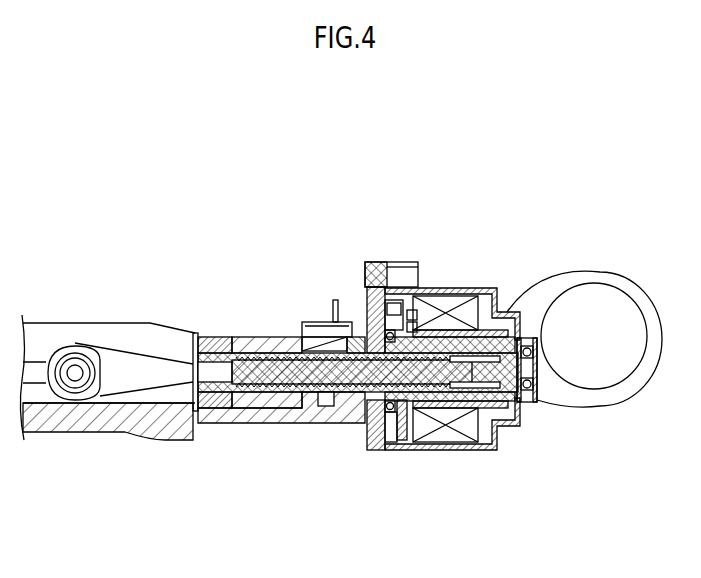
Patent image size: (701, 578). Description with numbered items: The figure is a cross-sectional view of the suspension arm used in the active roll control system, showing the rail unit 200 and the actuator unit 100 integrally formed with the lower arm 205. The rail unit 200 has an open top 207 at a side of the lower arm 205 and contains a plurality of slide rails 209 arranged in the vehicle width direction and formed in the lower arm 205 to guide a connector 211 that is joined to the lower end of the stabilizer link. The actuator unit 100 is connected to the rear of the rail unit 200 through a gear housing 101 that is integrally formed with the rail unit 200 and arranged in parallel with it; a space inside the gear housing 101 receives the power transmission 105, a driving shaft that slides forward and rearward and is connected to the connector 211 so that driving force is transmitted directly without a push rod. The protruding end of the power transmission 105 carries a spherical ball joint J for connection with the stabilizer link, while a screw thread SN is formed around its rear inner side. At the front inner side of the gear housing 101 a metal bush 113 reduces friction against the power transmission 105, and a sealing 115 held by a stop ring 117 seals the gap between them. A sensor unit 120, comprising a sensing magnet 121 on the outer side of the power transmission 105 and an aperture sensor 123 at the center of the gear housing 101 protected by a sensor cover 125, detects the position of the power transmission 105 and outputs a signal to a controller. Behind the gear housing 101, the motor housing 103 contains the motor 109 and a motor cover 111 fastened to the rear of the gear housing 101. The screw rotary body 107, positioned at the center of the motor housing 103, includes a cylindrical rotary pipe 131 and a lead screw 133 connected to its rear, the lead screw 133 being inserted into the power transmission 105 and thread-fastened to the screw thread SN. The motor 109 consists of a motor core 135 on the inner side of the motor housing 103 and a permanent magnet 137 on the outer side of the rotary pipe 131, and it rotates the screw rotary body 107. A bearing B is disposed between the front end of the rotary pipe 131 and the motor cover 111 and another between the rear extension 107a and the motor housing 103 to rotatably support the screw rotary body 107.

The actuator unit 100 is at (338, 235).
The gear housing 101 is at (306, 415).
The motor housing 103 is at (462, 450).
The power transmission 105 is at (207, 340).
The screw rotary body 107 is at (337, 517).
The rear extension 107a is at (530, 395).
The motor 109 is at (432, 237).
The motor cover 111 is at (392, 262).
The metal bush 113 is at (268, 408).
The sealing 115 is at (215, 408).
The stop ring 117 is at (197, 410).
The sensor unit 120 is at (322, 266).
The sensing magnet 121 is at (322, 352).
The aperture sensor 123 is at (325, 352).
The sensor cover 125 is at (330, 330).
The rotary pipe 131 is at (388, 452).
The lead screw 133 is at (362, 410).
The motor core 135 is at (447, 300).
The permanent magnet 137 is at (480, 298).
The rail unit 200 is at (89, 298).
The lower arm 205 is at (128, 448).
The open top 207 is at (41, 333).
The slide rails 209 is at (36, 405).
The connector 211 is at (120, 370).
The bearing B is at (372, 338).
The spherical ball joint J is at (77, 380).
The screw thread SN is at (452, 400).